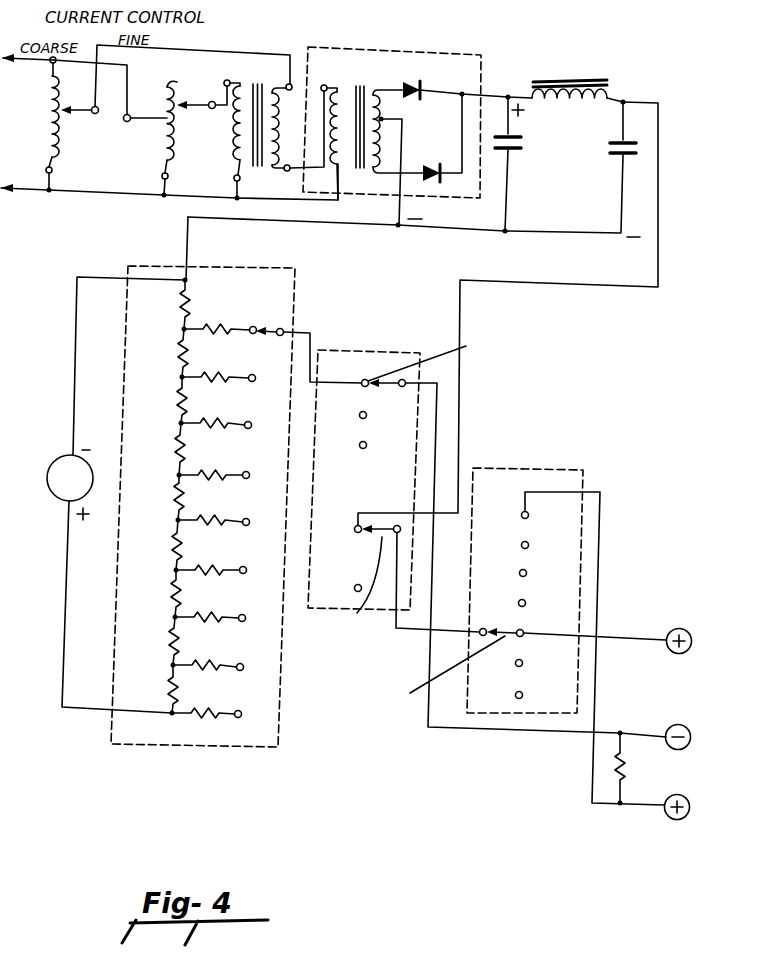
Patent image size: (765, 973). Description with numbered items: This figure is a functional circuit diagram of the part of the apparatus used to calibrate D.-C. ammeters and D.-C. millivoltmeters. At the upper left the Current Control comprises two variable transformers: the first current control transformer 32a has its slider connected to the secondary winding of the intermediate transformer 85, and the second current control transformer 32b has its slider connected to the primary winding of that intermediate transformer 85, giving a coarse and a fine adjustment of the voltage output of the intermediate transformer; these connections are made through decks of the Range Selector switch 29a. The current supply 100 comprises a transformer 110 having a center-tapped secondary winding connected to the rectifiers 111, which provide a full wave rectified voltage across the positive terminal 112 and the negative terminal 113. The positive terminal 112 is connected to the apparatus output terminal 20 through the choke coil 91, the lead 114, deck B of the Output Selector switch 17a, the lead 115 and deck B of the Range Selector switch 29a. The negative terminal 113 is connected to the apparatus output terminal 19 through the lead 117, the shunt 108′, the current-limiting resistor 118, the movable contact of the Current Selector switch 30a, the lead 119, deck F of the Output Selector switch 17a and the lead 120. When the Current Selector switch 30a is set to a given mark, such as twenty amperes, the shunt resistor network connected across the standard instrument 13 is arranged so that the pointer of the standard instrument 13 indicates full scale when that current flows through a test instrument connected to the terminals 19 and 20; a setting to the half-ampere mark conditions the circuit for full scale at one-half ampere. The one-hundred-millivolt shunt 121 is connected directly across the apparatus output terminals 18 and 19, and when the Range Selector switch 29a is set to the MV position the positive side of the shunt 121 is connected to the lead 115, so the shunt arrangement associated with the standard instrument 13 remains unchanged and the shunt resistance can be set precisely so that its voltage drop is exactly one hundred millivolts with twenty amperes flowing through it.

The current control transformer 32a is at (60, 123).
The current control transformer 32b is at (182, 88).
The intermediate transformer 85 is at (234, 138).
The current supply 100 is at (333, 46).
The transformer 110 is at (356, 85).
The rectifiers 111 is at (401, 86).
The positive terminal 112 is at (508, 92).
The choke coil 91 is at (560, 81).
The lead 114 is at (660, 152).
The negative terminal 113 is at (399, 230).
The lead 117 is at (187, 226).
The Current Selector switch 30a is at (160, 263).
The current-limiting resistor 118 is at (181, 303).
The shunt 108′ is at (177, 357).
The lead 119 is at (310, 354).
The 100 mv. shunt 121 is at (238, 380).
The Output Selector switch 17a is at (390, 350).
The standard instrument 13 is at (46, 489).
The Range Selector switch 29a is at (582, 535).
The lead 115 is at (403, 632).
The lead 120 is at (485, 730).
The apparatus output terminal 20 is at (690, 630).
The apparatus output terminal 19 is at (692, 724).
The apparatus output terminal 18 is at (691, 802).